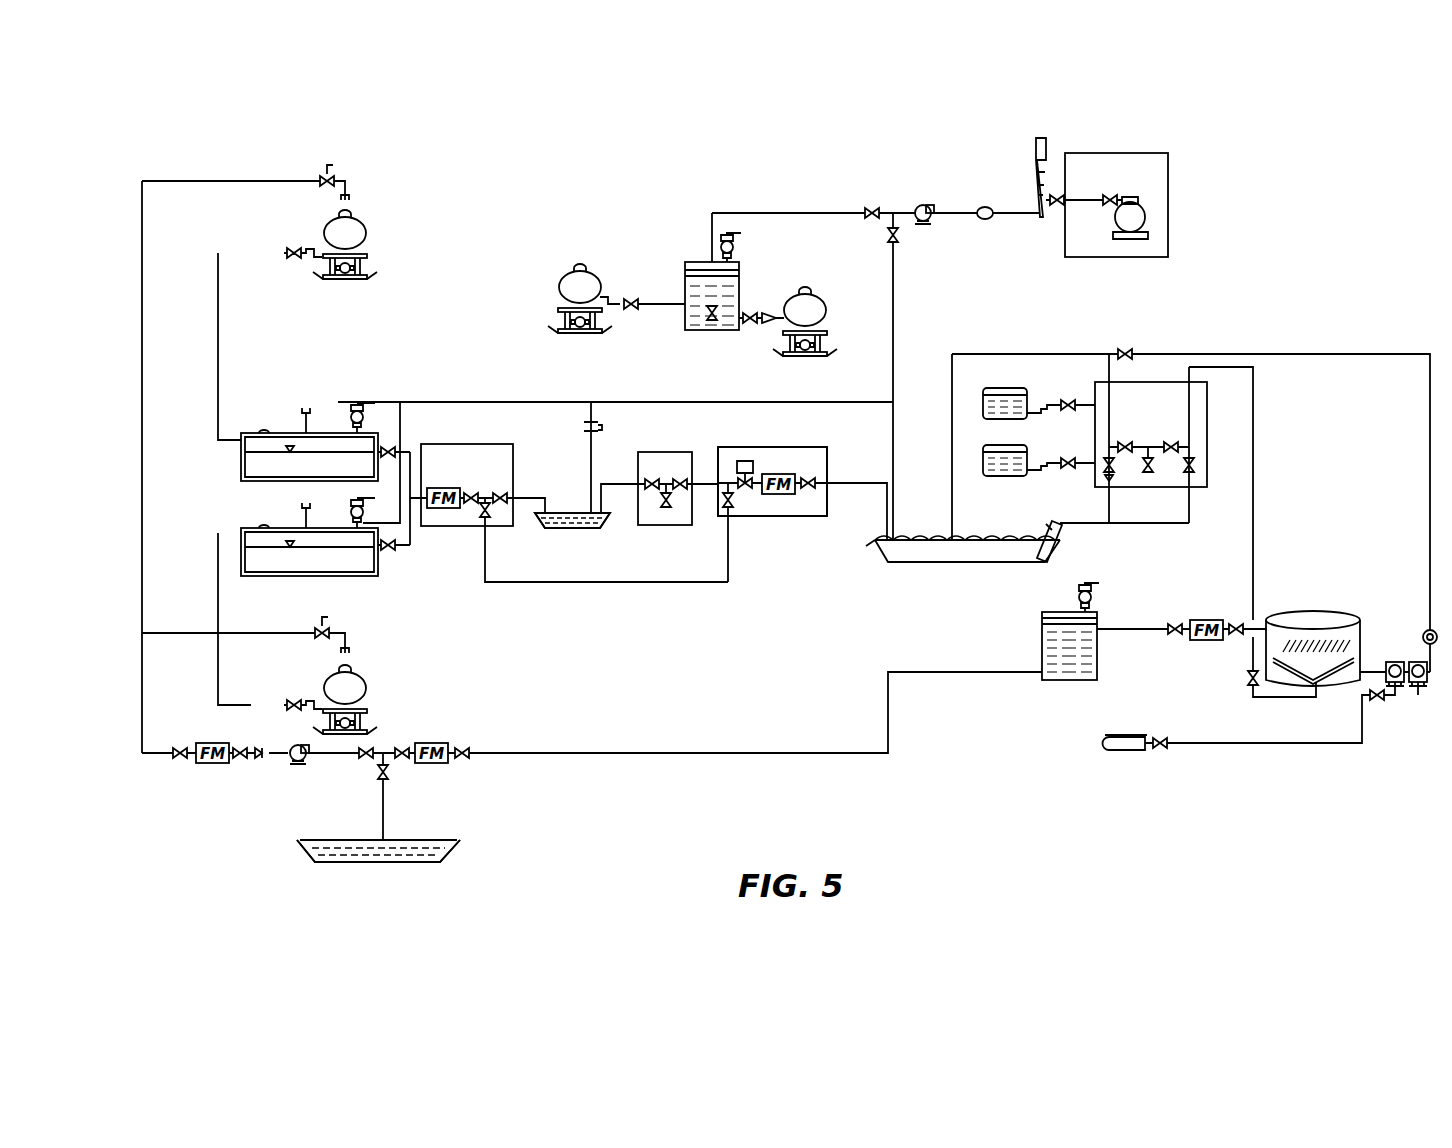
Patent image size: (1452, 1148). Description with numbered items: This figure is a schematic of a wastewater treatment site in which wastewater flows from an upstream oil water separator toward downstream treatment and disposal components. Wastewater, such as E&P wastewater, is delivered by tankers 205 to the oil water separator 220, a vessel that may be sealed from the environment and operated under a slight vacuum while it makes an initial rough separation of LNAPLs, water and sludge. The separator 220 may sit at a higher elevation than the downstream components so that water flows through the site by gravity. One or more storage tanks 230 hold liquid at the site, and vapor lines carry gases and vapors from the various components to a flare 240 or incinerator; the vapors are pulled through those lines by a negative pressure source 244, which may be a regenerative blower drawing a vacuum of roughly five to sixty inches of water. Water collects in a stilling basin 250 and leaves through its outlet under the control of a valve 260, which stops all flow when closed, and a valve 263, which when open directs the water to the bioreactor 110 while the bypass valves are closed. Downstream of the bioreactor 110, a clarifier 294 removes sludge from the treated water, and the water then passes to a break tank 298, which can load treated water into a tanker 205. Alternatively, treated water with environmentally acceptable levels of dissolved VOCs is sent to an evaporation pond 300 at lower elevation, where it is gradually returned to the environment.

The bioreactor 110 is at (905, 560).
The tanker 205 is at (360, 237).
The oil water separator 220 is at (240, 462).
The storage tank 230 is at (685, 268).
The flare 240 is at (1036, 148).
The negative pressure source 244 is at (928, 204).
The stilling basin 250 is at (572, 522).
The valve 260 is at (652, 478).
The valve 263 is at (815, 478).
The clarifier 294 is at (1322, 613).
The break tank 298 is at (1042, 630).
The evaporation pond 300 is at (430, 858).